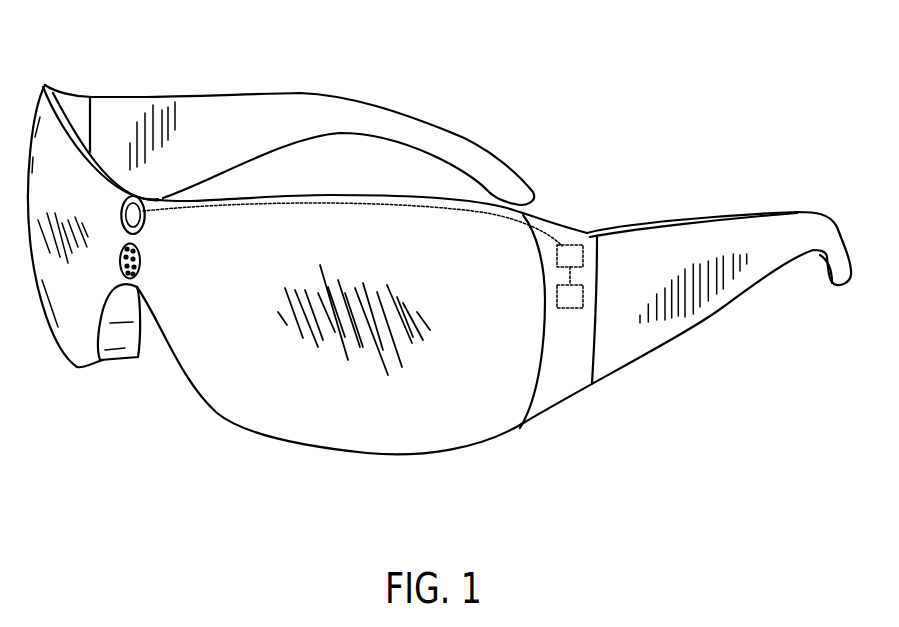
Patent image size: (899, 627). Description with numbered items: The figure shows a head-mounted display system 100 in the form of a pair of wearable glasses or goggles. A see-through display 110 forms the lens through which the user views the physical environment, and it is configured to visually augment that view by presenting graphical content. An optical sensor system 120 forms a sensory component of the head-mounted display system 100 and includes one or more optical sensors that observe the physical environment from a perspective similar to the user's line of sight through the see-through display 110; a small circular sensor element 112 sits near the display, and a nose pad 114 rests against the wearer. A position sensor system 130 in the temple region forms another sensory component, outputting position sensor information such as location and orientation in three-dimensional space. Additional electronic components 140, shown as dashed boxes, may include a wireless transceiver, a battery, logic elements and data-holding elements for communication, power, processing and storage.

The head-mounted display system 100 is at (518, 60).
The see-through display 110 is at (300, 430).
The camera 112 is at (138, 209).
The nose pad 114 is at (138, 357).
The optical sensor system 120 is at (182, 160).
The position sensor system 130 is at (570, 297).
The additional electronic components 140 is at (573, 252).